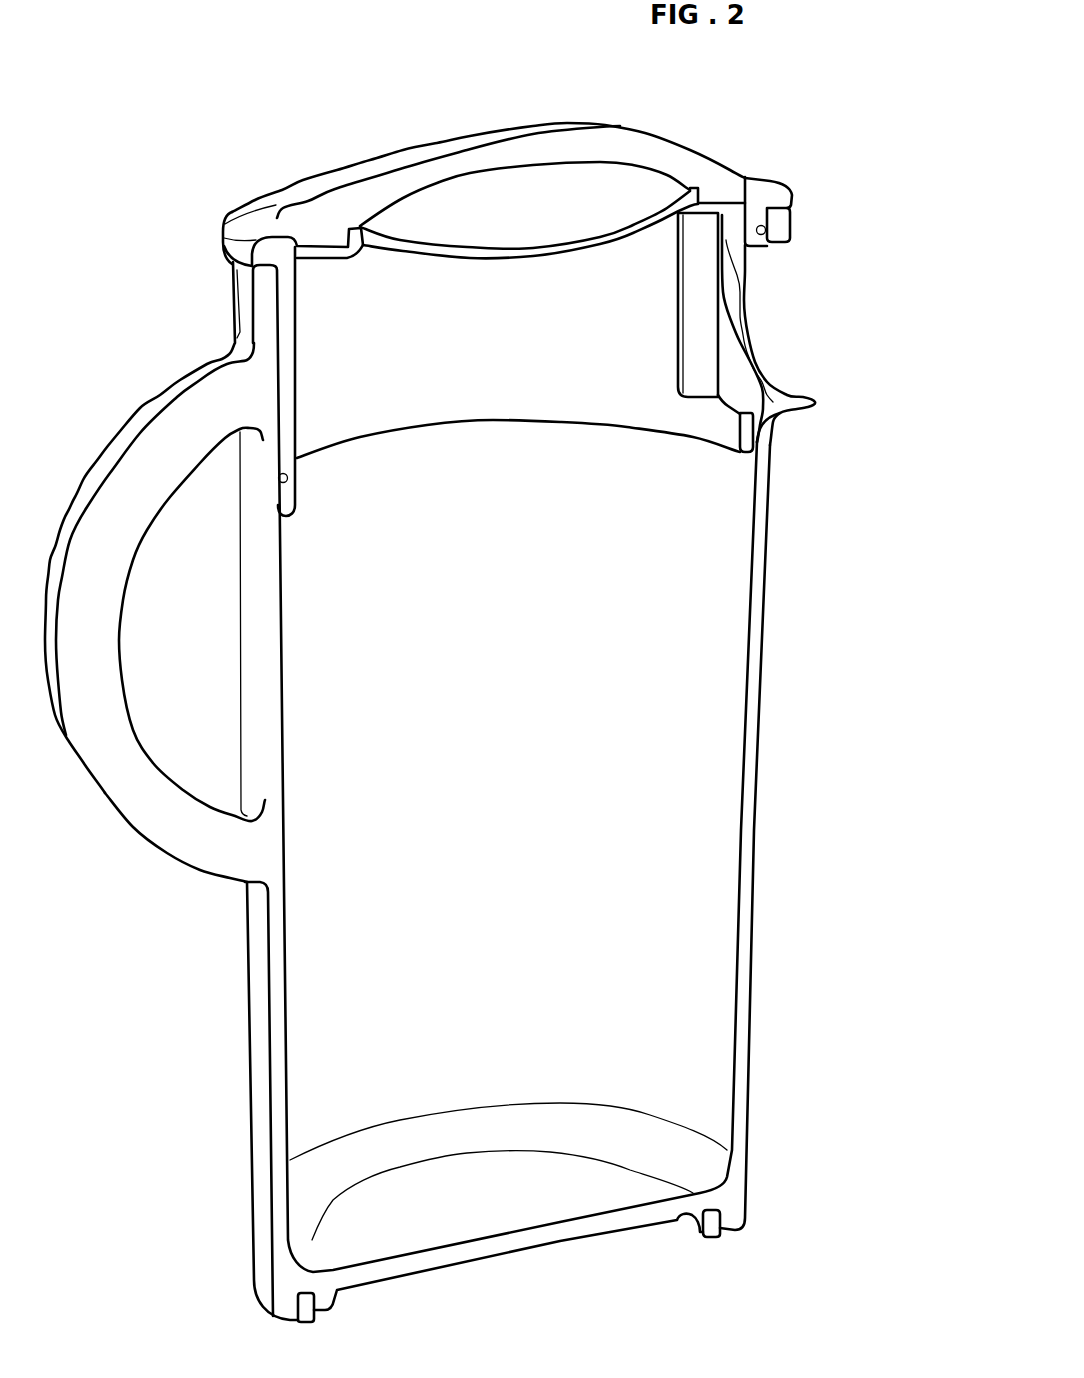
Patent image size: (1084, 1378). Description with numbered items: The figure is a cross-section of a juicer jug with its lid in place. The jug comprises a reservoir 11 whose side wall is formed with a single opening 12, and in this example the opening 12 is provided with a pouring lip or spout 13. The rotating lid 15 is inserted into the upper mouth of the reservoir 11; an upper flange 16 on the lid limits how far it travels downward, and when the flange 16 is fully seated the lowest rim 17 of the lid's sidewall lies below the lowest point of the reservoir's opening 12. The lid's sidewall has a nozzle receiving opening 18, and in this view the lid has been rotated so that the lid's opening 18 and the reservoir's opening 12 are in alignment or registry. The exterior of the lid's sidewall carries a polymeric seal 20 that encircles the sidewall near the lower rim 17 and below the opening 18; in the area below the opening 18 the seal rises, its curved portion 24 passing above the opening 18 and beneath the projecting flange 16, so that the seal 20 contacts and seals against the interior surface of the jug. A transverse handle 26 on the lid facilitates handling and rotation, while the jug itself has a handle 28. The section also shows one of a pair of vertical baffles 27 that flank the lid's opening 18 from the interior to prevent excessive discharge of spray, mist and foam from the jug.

The reservoir 11 is at (707, 727).
The opening 12 is at (757, 308).
The pouring lip or spout 13 is at (783, 405).
The rotating lid 15 is at (700, 413).
The upper flange 16 is at (233, 212).
The lower rim of the lid's sidewall 17 is at (556, 423).
The nozzle receiving opening 18 is at (727, 262).
The polymeric seal 20 is at (297, 478).
The curved portion of the seal 24 is at (767, 230).
The transverse handle 26 is at (690, 160).
The vertical baffles 27 is at (698, 292).
The handle 28 is at (195, 840).